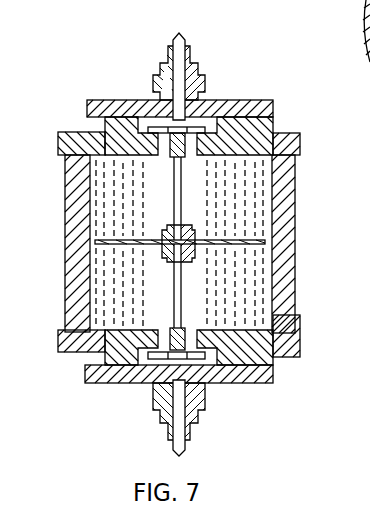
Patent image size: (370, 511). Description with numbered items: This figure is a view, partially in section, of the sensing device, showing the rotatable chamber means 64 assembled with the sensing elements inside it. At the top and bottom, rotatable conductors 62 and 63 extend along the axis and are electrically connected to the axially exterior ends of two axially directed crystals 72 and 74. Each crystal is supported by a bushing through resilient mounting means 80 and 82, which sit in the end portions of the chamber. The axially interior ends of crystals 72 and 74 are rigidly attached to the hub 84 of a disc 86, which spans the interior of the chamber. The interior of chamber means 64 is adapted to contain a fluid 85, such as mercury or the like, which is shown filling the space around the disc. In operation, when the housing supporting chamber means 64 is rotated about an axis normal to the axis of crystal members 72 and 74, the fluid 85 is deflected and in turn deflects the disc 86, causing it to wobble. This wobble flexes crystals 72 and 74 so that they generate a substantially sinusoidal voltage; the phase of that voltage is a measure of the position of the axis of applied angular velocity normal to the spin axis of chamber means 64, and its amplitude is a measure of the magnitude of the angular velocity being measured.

The rotatable conductor 62 is at (181, 34).
The rotatable conductor 63 is at (182, 455).
The rotatable chamber means 64 is at (283, 233).
The crystal 72 is at (174, 200).
The crystal 74 is at (180, 280).
The resilient mounting means 80 is at (180, 158).
The resilient mounting means 82 is at (172, 328).
The hub 84 is at (185, 230).
The fluid 85 is at (112, 187).
The disc 86 is at (232, 240).